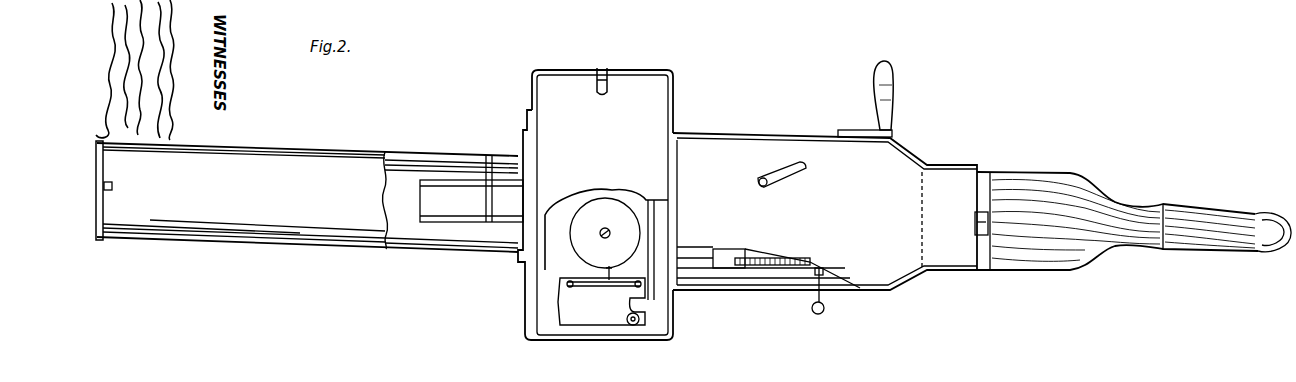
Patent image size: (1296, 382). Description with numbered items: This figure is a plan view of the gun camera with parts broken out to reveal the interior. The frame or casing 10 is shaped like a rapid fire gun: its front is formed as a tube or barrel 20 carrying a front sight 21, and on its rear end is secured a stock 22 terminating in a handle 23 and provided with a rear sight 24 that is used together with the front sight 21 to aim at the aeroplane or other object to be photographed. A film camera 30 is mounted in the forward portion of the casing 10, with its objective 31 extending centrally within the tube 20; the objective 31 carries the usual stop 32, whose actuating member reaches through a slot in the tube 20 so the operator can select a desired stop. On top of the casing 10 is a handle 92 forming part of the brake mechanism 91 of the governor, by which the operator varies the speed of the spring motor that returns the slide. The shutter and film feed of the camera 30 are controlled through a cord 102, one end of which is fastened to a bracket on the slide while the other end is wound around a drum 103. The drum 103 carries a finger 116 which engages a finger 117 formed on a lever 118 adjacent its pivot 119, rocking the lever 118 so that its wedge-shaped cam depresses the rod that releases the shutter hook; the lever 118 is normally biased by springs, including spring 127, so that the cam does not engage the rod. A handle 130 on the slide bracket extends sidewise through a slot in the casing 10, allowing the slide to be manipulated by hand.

The casing 10 is at (775, 146).
The tube or barrel 20 is at (372, 153).
The front sight 21 is at (112, 188).
The stock 22 is at (1061, 180).
The handle 23 is at (1272, 241).
The rear sight 24 is at (976, 228).
The film camera 30 is at (538, 290).
The objective 31 is at (469, 207).
The stop 32 is at (489, 159).
The brake mechanism 91 is at (893, 87).
The handle 92 is at (790, 170).
The cord 102 is at (702, 272).
The drum 103 is at (625, 222).
The finger 116 is at (636, 262).
The finger 117 is at (611, 258).
The lever 118 is at (634, 289).
The pivot 119 is at (607, 286).
The spring 127 is at (578, 283).
The handle 130 is at (825, 295).